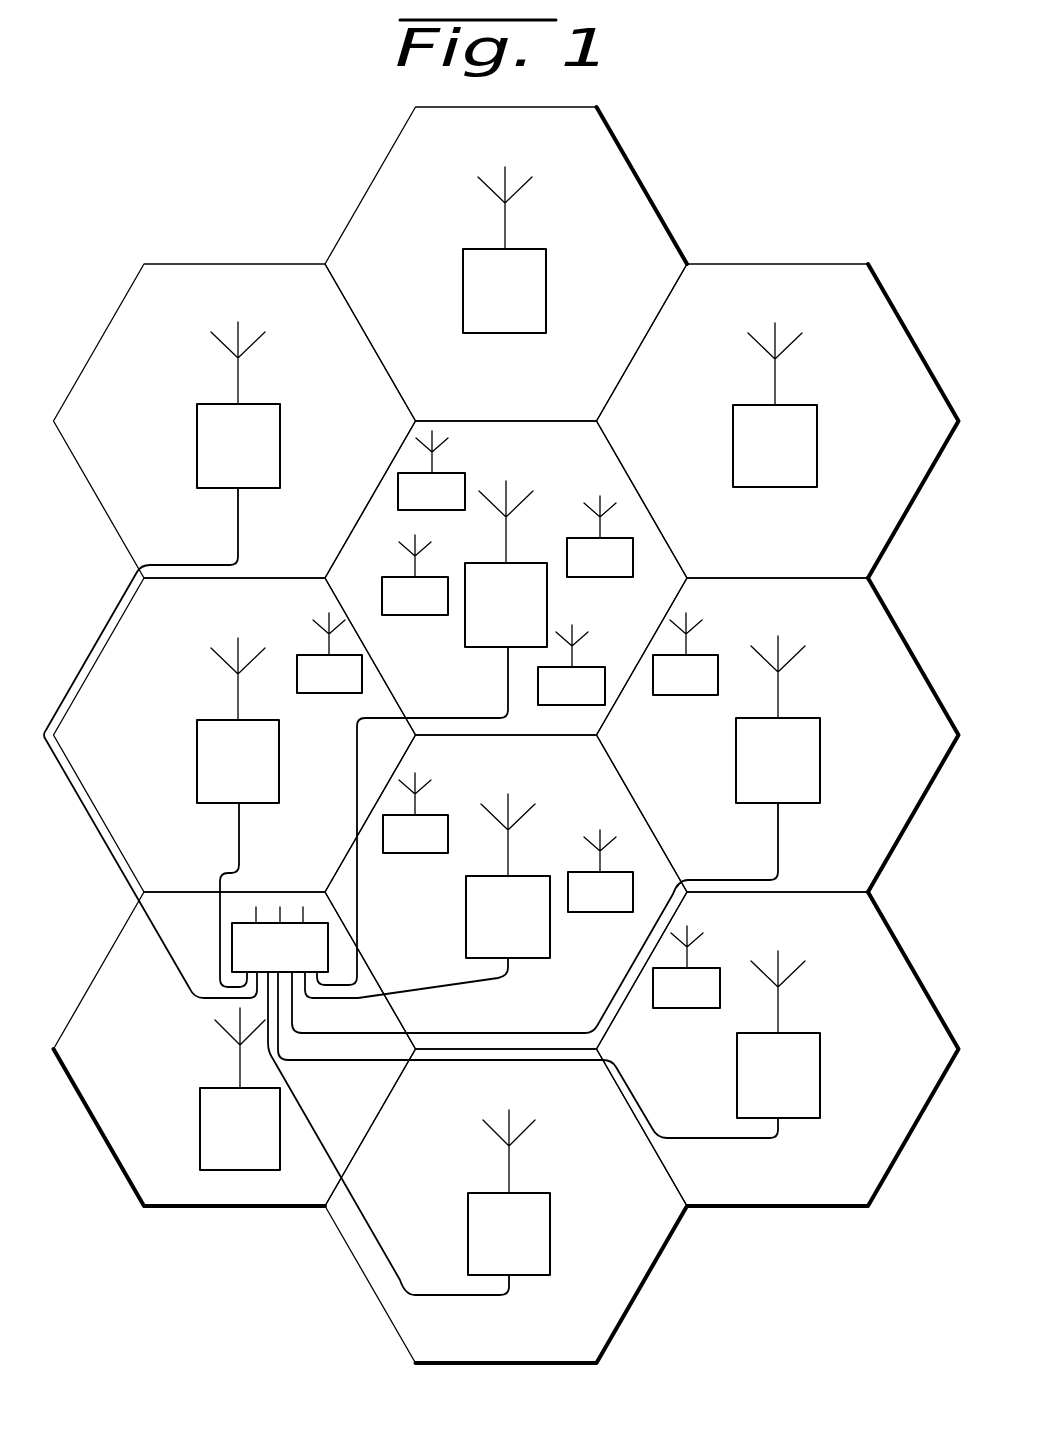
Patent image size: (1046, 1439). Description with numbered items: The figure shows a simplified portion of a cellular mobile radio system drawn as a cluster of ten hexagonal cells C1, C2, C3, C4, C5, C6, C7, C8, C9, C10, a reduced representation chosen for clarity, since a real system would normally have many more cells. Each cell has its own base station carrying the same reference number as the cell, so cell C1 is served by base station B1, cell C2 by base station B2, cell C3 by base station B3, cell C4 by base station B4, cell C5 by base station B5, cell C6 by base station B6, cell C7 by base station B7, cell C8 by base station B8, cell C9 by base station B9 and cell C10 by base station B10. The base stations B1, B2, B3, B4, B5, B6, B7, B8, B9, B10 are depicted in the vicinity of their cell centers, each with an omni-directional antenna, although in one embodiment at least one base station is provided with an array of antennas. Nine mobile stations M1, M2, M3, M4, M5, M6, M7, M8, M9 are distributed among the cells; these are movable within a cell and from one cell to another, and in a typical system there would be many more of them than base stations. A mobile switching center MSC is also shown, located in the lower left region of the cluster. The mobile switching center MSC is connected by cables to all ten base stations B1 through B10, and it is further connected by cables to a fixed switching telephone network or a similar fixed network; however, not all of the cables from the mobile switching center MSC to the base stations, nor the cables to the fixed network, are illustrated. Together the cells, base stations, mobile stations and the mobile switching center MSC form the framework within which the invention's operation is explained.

The cell C1 is at (440, 710).
The cell C2 is at (705, 556).
The cell C3 is at (710, 868).
The cell C4 is at (441, 1022).
The cell C5 is at (173, 868).
The cell C6 is at (171, 555).
The cell C7 is at (438, 399).
The cell C8 is at (711, 1183).
The cell C9 is at (443, 1341).
The cell C10 is at (184, 1184).
The base station B1 is at (432, 733).
The base station B2 is at (775, 405).
The base station B3 is at (556, 834).
The base station B4 is at (427, 896).
The base station B5 is at (238, 812).
The base station B6 is at (162, 660).
The base station B7 is at (504, 250).
The base station B8 is at (549, 1044).
The base station B9 is at (409, 1133).
The base station B10 is at (240, 1089).
The mobile station M1 is at (686, 967).
The mobile station M2 is at (329, 653).
The mobile station M3 is at (415, 575).
The mobile station M4 is at (600, 536).
The mobile station M5 is at (685, 654).
The mobile station M6 is at (431, 470).
The mobile station M7 is at (571, 665).
The mobile station M8 is at (600, 871).
The mobile station M9 is at (415, 813).
The mobile switching center MSC is at (280, 939).